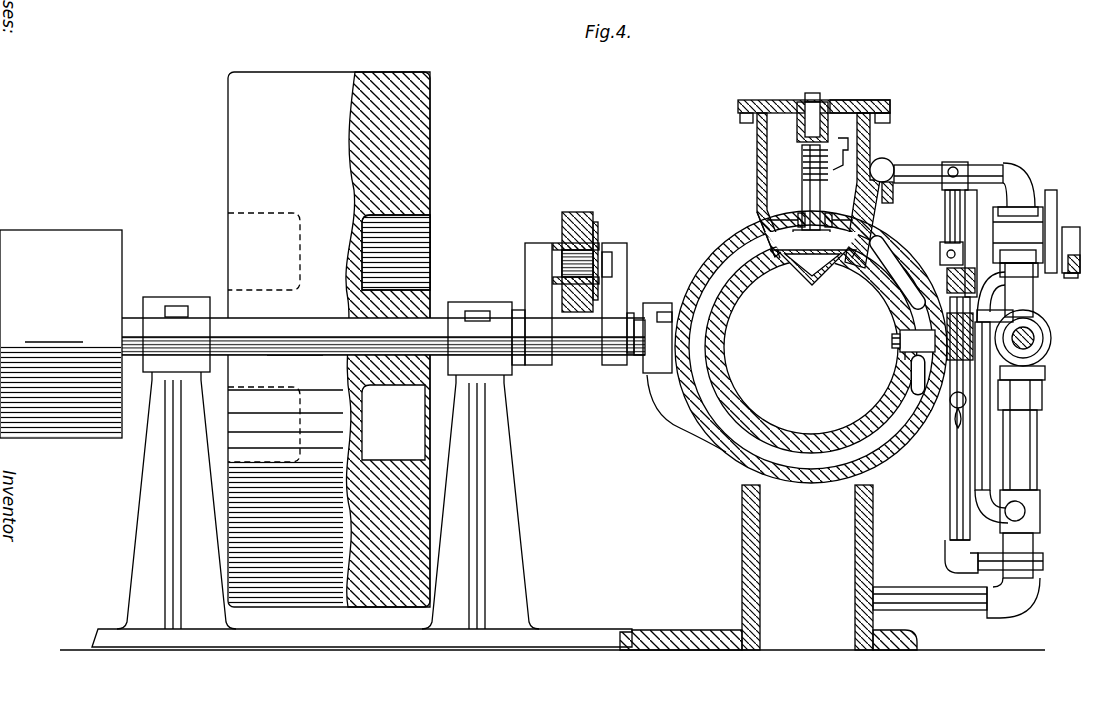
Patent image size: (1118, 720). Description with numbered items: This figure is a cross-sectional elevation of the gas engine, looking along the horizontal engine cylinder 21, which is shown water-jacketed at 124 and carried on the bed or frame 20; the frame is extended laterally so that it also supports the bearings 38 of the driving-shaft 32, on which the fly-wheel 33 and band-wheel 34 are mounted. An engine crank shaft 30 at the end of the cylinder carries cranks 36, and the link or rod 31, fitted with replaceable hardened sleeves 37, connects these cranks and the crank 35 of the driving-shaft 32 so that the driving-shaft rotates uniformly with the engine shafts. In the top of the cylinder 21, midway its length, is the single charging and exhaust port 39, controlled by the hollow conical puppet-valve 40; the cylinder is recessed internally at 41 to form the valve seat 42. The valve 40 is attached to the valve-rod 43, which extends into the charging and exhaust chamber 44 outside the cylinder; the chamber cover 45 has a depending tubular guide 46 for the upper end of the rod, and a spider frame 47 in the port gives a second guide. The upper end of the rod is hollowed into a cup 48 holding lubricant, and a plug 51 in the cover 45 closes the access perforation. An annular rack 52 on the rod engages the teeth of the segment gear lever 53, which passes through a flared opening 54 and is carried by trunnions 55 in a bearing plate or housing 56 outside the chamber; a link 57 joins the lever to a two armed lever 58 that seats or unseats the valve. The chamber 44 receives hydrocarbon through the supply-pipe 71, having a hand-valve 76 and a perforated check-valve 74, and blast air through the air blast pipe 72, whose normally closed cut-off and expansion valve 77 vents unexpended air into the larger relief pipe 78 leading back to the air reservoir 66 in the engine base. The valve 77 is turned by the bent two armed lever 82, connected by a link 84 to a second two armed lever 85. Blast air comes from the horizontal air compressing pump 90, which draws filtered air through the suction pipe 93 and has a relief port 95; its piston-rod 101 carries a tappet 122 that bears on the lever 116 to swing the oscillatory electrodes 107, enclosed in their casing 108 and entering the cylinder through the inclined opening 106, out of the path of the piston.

The bed or frame 20 is at (678, 632).
The engine cylinder 21 is at (737, 456).
The engine crank shaft 30 is at (641, 362).
The link or connecting rod 31 is at (578, 212).
The driving-shaft 32 is at (383, 336).
The fly-wheel 33 is at (312, 72).
The band-wheel 34 is at (61, 334).
The crank 35 is at (530, 280).
The cranks 36 is at (622, 296).
The hardened sleeves 37 is at (562, 238).
The bearings 38 is at (328, 463).
The charging and exhaust port 39 is at (841, 265).
The puppet-valve 40 is at (804, 272).
The internal recess 41 is at (777, 256).
The valve seat 42 is at (752, 250).
The valve-rod 43 is at (808, 192).
The charging and exhaust chamber 44 is at (757, 152).
The top or cover 45 is at (814, 100).
The tubular guide 46 is at (828, 122).
The spider frame 47 is at (845, 205).
The cup 48 is at (836, 112).
The plug 51 is at (816, 99).
The annular rack 52 is at (800, 170).
The segment gear lever 53 is at (844, 160).
The flared opening 54 is at (888, 160).
The trunnions 55 is at (948, 164).
The bearing plate or housing 56 is at (893, 190).
The link 57 is at (948, 222).
The two armed lever 58 is at (941, 248).
The air reservoir 66 is at (807, 567).
The hydrocarbon supply-pipe 71 is at (985, 176).
The air blast pipe 72 is at (1030, 176).
The check-valve 74 is at (962, 280).
The hand-valve 76 is at (954, 412).
The cut-off and expansion valve 77 is at (1018, 235).
The relief pipe 78 is at (975, 468).
The two armed lever 82 is at (1057, 218).
The link 84 is at (1072, 232).
The two armed lever 85 is at (1078, 272).
The air compressing pump 90 is at (1040, 358).
The inlet or suction pipe 93 is at (900, 597).
The relief port 95 is at (1020, 494).
The piston-rod 101 is at (1020, 395).
The inclined opening 106 is at (903, 330).
The oscillatory electrodes 107 is at (892, 342).
The casing or holder 108 is at (905, 358).
The lever 116 is at (1012, 306).
The tappet 122 is at (1018, 328).
The water-jacket 124 is at (736, 428).